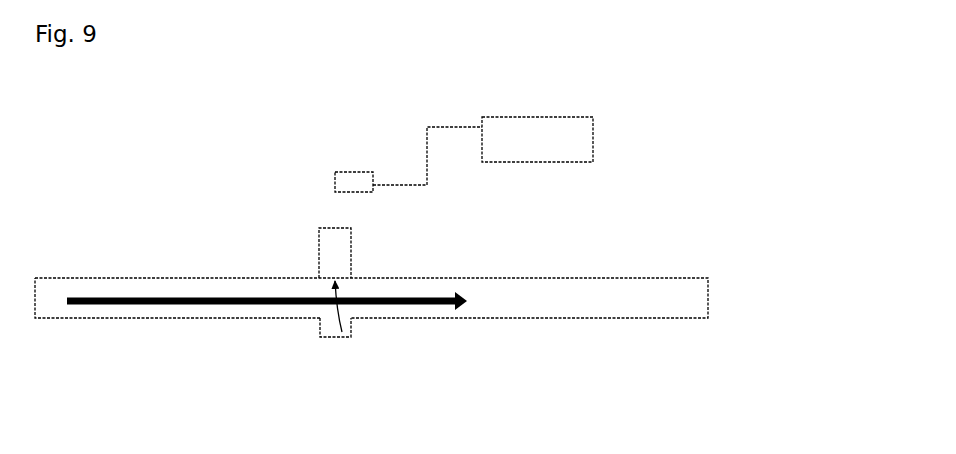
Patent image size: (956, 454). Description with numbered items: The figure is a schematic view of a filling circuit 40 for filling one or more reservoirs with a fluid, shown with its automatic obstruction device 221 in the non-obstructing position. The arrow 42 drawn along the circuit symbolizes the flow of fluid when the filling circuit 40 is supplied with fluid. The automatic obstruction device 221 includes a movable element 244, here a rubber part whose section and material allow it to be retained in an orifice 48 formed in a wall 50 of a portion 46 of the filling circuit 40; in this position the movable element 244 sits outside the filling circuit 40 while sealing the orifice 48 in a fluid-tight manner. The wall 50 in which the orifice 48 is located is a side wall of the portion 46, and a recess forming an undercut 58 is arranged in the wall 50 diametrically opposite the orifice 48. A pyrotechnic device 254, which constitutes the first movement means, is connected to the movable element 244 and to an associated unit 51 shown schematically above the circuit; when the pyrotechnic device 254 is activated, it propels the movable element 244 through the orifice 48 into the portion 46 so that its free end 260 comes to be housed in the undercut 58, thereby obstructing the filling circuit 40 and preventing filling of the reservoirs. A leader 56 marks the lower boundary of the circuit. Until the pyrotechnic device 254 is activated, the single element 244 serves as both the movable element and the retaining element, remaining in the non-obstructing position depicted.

The filling circuit 40 is at (205, 257).
The arrow 42 is at (267, 297).
The portion of the filling circuit 46 is at (325, 290).
The orifice 48 is at (355, 277).
The wall 50 is at (153, 276).
The controller 51 is at (601, 150).
The channel wall 56 is at (216, 318).
The undercut 58 is at (320, 337).
The automatic obstruction device 221 is at (312, 269).
The movable element 244 is at (318, 235).
The pyrotechnic device 254 is at (355, 171).
The free end 260 is at (352, 330).